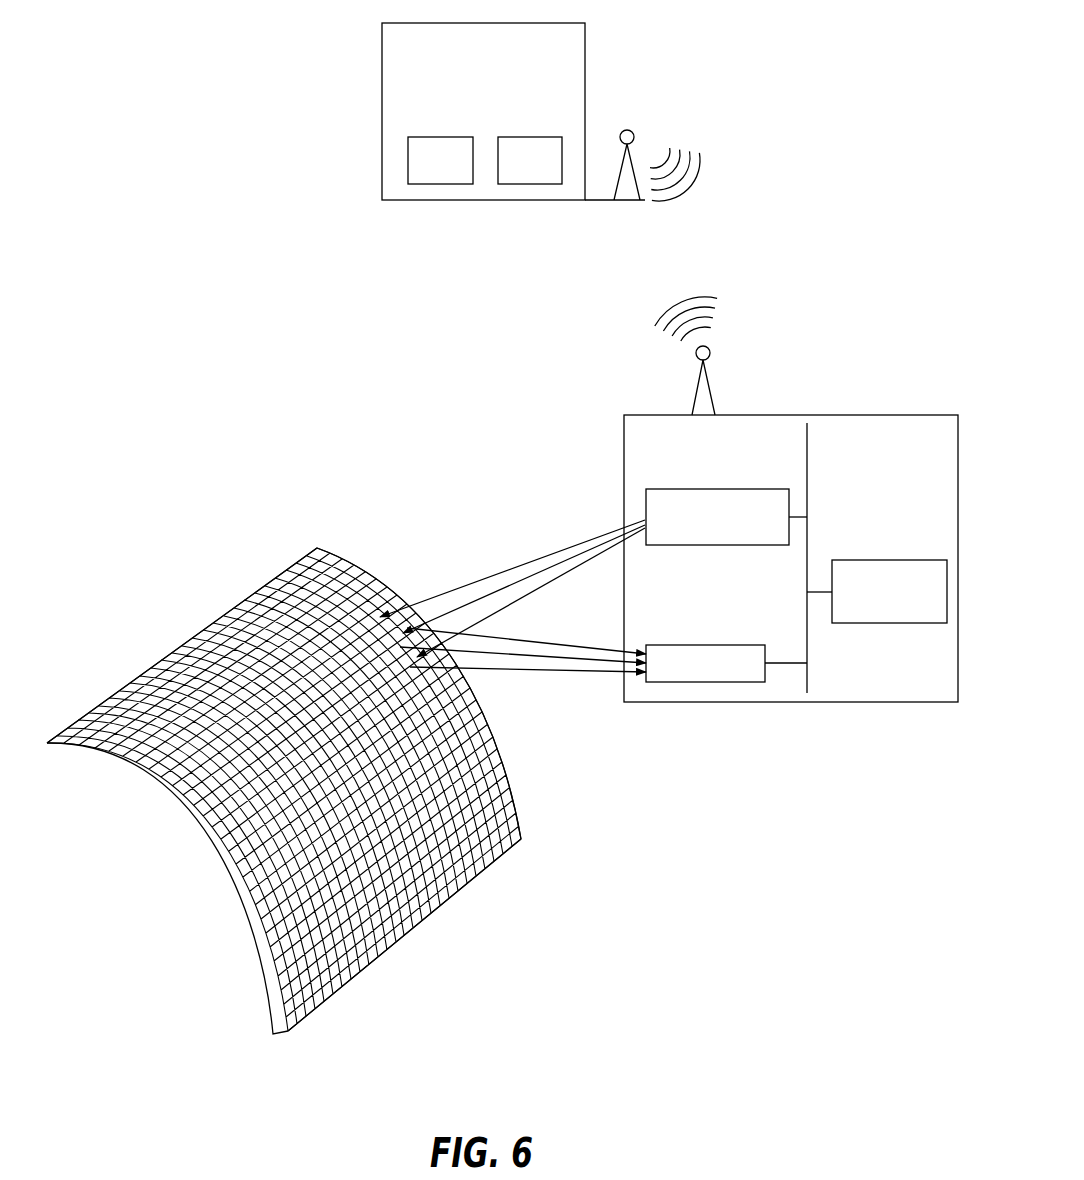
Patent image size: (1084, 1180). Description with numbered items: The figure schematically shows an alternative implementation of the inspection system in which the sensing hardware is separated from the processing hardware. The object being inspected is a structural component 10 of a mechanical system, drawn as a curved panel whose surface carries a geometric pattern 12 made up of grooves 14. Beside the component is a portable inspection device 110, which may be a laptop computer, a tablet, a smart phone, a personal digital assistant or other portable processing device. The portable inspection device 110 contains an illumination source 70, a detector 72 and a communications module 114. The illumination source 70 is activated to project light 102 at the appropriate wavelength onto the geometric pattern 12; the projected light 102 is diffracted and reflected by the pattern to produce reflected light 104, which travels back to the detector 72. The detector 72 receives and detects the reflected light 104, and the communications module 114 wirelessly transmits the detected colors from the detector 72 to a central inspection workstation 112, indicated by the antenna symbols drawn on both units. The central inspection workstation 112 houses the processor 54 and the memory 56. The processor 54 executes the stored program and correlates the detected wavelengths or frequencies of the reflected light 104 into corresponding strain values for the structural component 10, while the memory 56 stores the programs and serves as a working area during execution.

The structural component 10 is at (96, 748).
The geometric pattern 12 is at (137, 663).
The grooves 14 is at (263, 627).
The processor 54 is at (451, 173).
The memory 56 is at (541, 173).
The illumination source 70 is at (725, 489).
The detector 72 is at (708, 645).
The projected light 102 is at (493, 612).
The reflected light 104 is at (513, 673).
The portable inspection device 110 is at (828, 415).
The central inspection workstation 112 is at (382, 110).
The communications module 114 is at (898, 560).